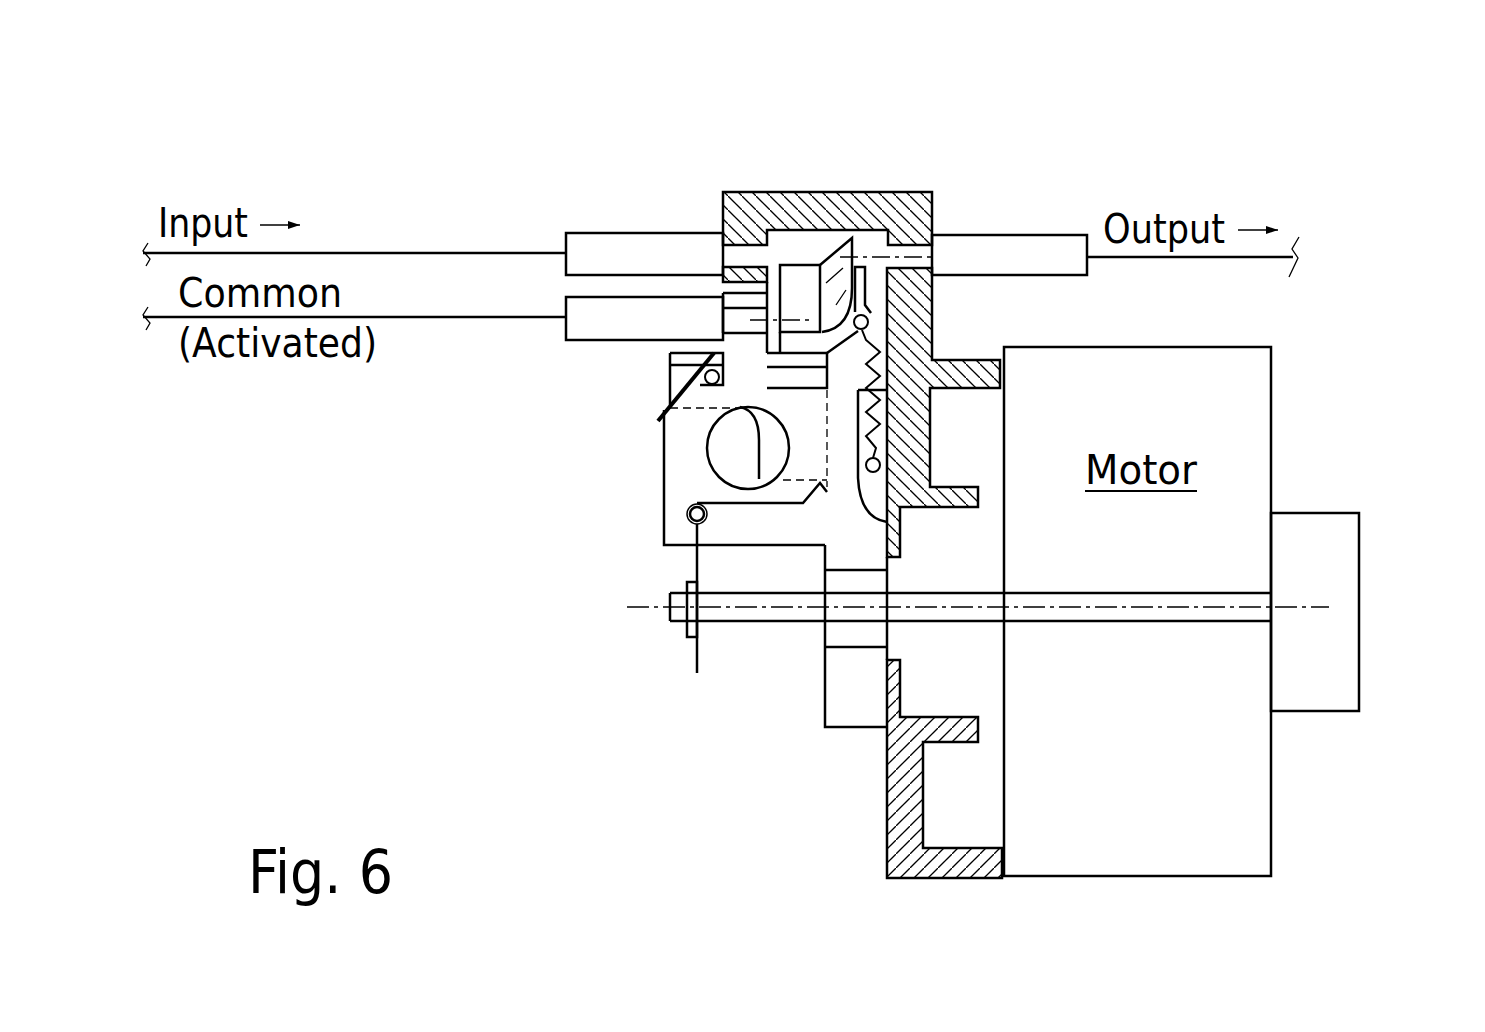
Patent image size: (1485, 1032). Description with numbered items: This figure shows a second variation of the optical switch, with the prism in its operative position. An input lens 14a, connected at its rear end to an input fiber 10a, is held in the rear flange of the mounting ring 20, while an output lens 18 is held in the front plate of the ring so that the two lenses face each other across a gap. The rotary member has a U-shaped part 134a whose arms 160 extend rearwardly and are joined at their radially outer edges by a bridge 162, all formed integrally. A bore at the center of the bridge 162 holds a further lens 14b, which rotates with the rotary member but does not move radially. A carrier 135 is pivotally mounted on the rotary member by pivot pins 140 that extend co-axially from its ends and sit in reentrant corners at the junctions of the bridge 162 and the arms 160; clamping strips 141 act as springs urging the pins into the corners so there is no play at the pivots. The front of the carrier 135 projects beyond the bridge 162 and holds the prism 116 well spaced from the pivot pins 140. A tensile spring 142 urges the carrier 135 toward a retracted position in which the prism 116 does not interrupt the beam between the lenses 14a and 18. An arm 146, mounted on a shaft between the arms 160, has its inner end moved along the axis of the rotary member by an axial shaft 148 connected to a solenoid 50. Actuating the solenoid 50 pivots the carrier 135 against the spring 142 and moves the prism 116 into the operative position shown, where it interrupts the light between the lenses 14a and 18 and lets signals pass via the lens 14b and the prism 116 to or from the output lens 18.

The mounting ring 20 is at (840, 188).
The prism 116 is at (858, 237).
The input lens 14a is at (737, 243).
The carrier 135 is at (871, 267).
The input fiber 10a is at (545, 253).
The output lens 18 is at (937, 235).
The lens 14b is at (737, 318).
The tensile spring 142 is at (872, 358).
The pivot pins 140 is at (697, 383).
The clamping strips 141 is at (663, 413).
The bridge 162 is at (737, 385).
The arms 160 is at (661, 468).
The U-shaped part 134a is at (684, 528).
The arm 146 is at (695, 645).
The axial shaft 148 is at (808, 620).
The solenoid 50 is at (1331, 533).